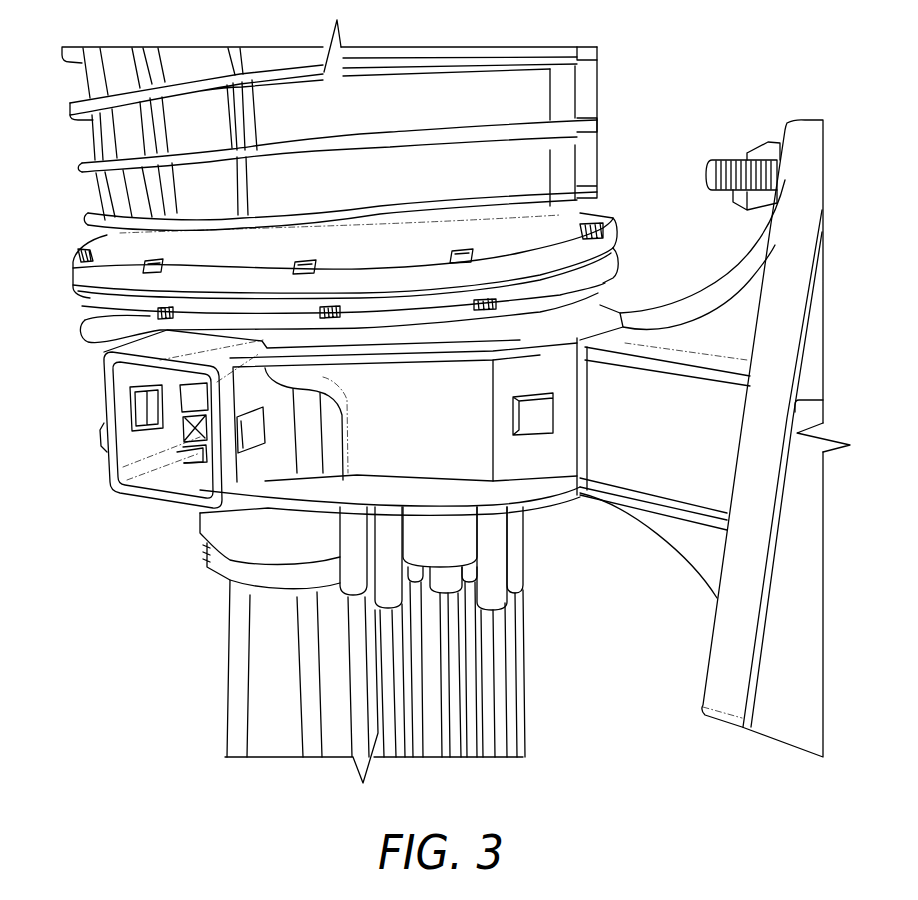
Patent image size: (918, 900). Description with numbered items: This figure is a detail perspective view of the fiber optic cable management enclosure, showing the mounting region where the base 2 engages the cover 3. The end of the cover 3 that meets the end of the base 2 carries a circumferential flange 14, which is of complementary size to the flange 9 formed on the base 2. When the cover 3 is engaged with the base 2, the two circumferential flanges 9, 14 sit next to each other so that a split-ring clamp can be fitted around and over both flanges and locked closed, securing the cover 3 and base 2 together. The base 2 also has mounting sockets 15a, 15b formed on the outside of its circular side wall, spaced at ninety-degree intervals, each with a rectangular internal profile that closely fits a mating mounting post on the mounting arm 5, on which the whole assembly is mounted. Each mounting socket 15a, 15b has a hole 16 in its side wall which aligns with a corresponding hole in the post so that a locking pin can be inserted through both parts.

The base 2 is at (428, 433).
The cover 3 is at (361, 117).
The mounting arm 5 is at (672, 443).
The flange 9 is at (90, 305).
The circumferential flange 14 is at (73, 272).
The mounting socket 15a is at (197, 447).
The mounting socket 15b is at (517, 453).
The hole 16 is at (130, 413).